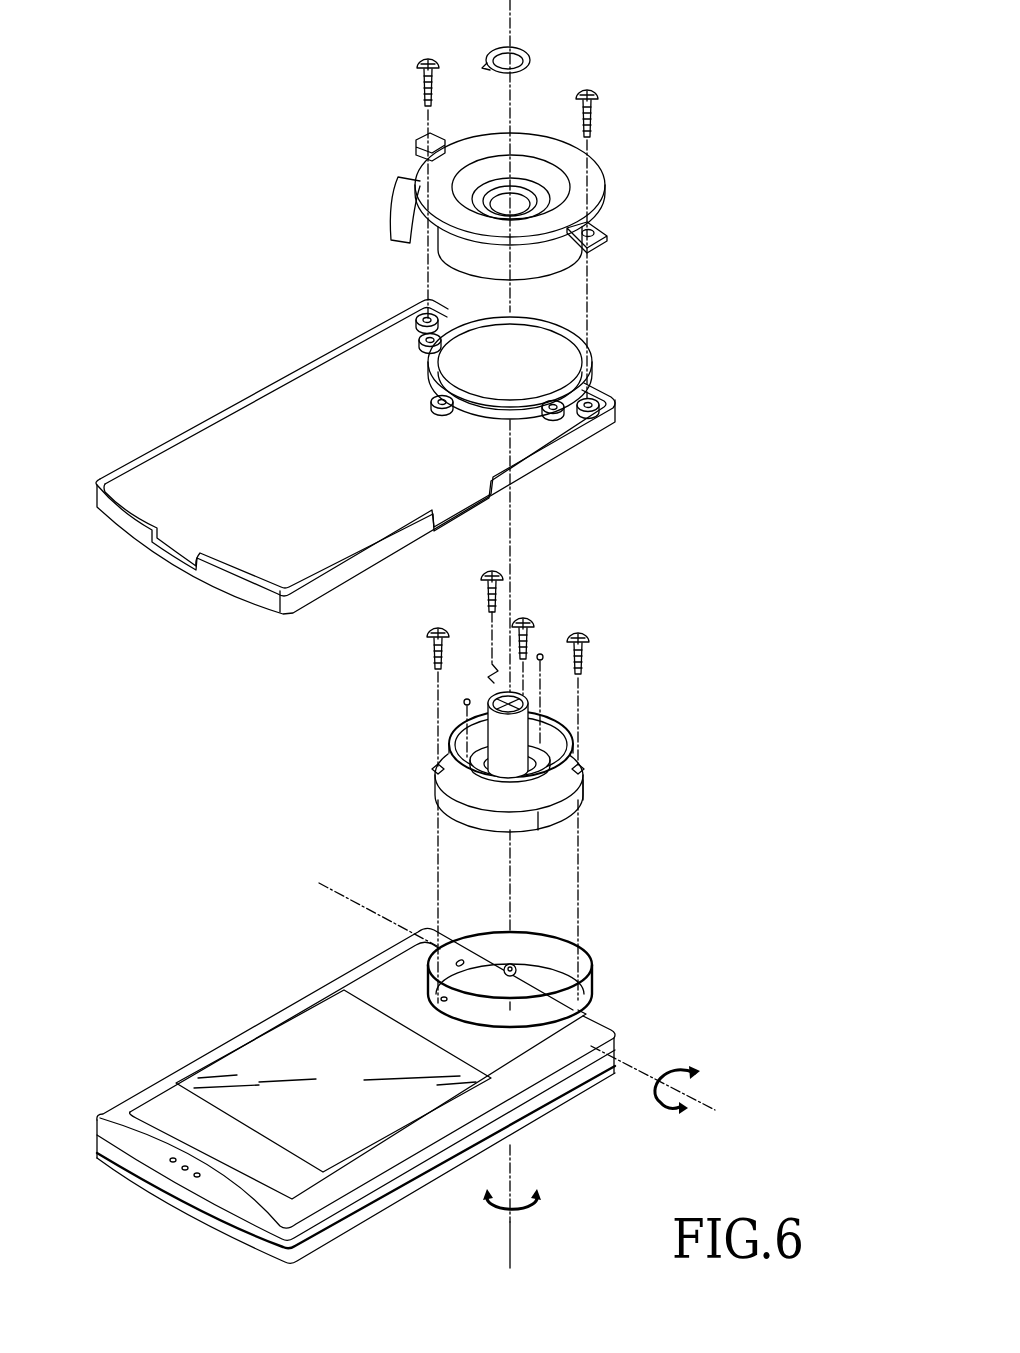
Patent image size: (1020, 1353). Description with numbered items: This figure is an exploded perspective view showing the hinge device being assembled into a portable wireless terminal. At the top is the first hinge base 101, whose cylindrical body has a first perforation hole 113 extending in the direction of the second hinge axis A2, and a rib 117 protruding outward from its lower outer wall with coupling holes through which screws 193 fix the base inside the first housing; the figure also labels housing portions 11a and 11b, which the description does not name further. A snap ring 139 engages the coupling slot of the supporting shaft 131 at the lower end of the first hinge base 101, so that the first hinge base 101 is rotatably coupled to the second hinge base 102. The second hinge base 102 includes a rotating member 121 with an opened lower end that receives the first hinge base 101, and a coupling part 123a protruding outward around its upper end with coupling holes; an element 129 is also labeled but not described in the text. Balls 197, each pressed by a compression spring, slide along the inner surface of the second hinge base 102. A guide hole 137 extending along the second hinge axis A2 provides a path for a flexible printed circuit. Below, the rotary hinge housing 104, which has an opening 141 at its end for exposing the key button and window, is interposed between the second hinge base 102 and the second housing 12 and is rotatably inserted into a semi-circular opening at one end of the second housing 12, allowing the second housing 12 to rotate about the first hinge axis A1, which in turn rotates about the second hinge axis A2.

The circular opening of upper housing 11a is at (605, 343).
The bottom plate of upper housing 11b is at (293, 410).
The second housing 12 is at (189, 1040).
The first hinge base 101 is at (614, 187).
The second hinge base 102 is at (422, 790).
The rotary hinge housing 104 is at (609, 978).
The first perforation hole 113 is at (524, 196).
The rib 117 is at (385, 210).
The rotating member 121 is at (567, 253).
The coupling part 123a is at (570, 807).
The rotary housing 129 is at (575, 730).
The supporting shaft 131 is at (497, 733).
The guide hole 137 is at (495, 695).
The snap ring 139 is at (532, 44).
The opening 141 is at (544, 996).
The screw 193 is at (592, 117).
The ball 197 is at (542, 654).
The first hinge axis A1 is at (702, 1100).
The second hinge axis A2 is at (513, 1243).